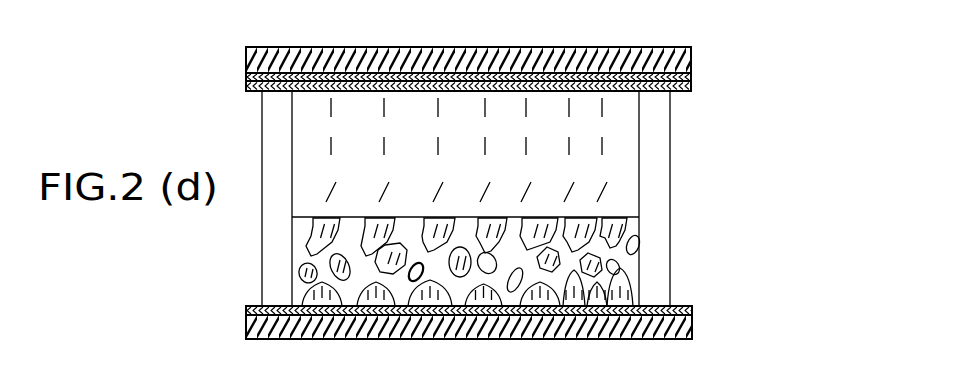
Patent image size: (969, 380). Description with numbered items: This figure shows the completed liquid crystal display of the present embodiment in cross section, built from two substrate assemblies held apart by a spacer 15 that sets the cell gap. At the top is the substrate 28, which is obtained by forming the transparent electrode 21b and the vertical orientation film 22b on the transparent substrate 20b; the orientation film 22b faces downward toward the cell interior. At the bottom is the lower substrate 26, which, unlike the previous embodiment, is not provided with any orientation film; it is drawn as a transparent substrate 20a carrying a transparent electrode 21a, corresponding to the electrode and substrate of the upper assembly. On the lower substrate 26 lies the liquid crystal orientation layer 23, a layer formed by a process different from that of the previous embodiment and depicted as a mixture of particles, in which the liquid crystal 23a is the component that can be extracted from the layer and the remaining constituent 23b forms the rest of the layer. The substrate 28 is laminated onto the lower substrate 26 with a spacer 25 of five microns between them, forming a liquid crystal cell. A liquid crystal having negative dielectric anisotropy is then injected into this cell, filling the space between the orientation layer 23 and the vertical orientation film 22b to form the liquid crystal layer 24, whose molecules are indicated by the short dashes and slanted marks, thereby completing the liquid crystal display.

The spacer 15 is at (277, 241).
The lower substrate 20a is at (693, 327).
The transparent substrate 20b is at (692, 60).
The lower electrode 21a is at (693, 310).
The transparent electrode 21b is at (692, 77).
The vertical orientation film 22b is at (692, 88).
The liquid crystal orientation layer 23 is at (571, 262).
The liquid crystal 23a is at (645, 257).
The large particles 23b is at (627, 290).
The liquid crystal layer 24 is at (627, 182).
The spacer 25 is at (657, 218).
The lower substrate 26 is at (563, 325).
The substrate 28 is at (550, 81).